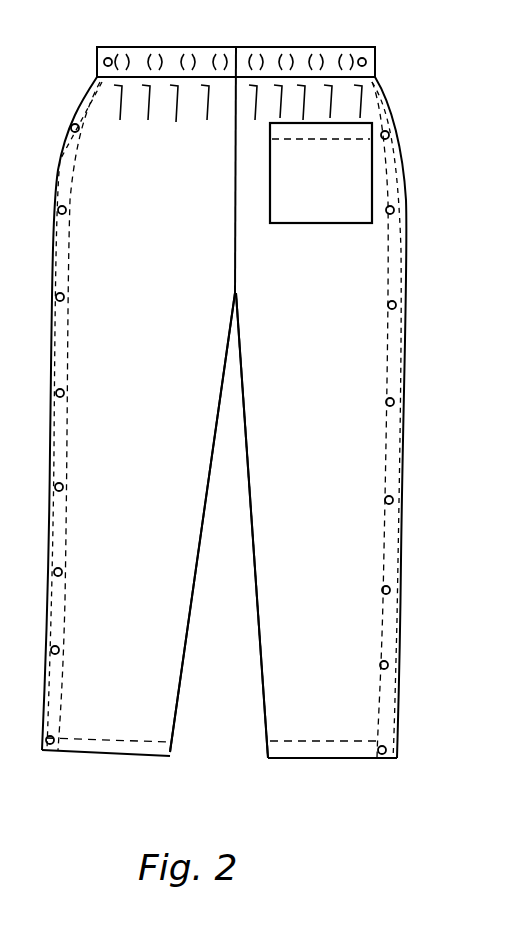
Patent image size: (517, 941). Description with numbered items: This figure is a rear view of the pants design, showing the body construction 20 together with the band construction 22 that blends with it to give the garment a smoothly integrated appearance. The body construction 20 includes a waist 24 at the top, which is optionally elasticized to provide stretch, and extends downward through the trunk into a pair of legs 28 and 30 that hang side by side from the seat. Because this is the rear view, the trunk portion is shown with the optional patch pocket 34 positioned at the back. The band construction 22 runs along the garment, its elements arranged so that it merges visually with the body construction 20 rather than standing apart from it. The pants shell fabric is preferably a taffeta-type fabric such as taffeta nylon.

The body construction 20 is at (158, 357).
The band construction 22 is at (0, 42).
The waist 24 is at (183, 52).
The leg 28 is at (295, 602).
The leg 30 is at (152, 672).
The patch pocket 34 is at (310, 203).